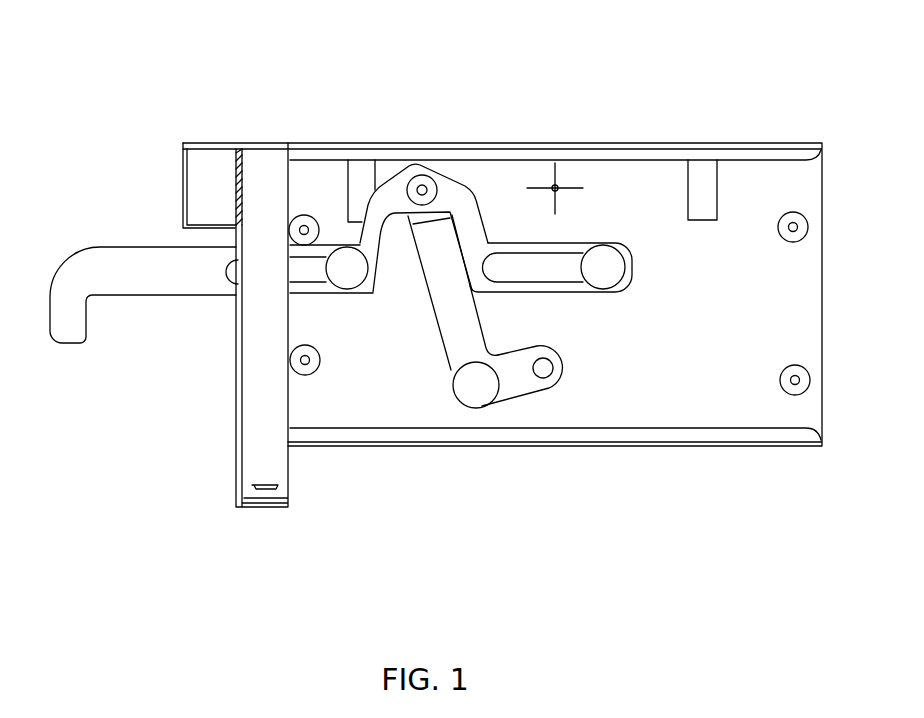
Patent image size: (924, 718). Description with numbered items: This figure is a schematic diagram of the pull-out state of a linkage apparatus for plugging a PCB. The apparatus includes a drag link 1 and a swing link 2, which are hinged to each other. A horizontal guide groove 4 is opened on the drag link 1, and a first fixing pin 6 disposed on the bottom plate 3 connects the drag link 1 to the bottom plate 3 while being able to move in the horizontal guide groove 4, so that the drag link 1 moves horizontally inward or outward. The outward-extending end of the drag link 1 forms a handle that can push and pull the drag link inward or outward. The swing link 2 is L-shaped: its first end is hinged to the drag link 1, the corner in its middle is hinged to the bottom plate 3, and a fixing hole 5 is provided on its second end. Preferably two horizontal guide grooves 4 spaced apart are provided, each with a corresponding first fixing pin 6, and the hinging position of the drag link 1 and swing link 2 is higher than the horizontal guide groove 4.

The drag link 1 is at (143, 276).
The swing link 2 is at (455, 323).
The bottom plate 3 is at (347, 145).
The horizontal guide groove 4 is at (542, 267).
The fixing hole 5 is at (547, 377).
The first fixing pin 6 is at (603, 268).